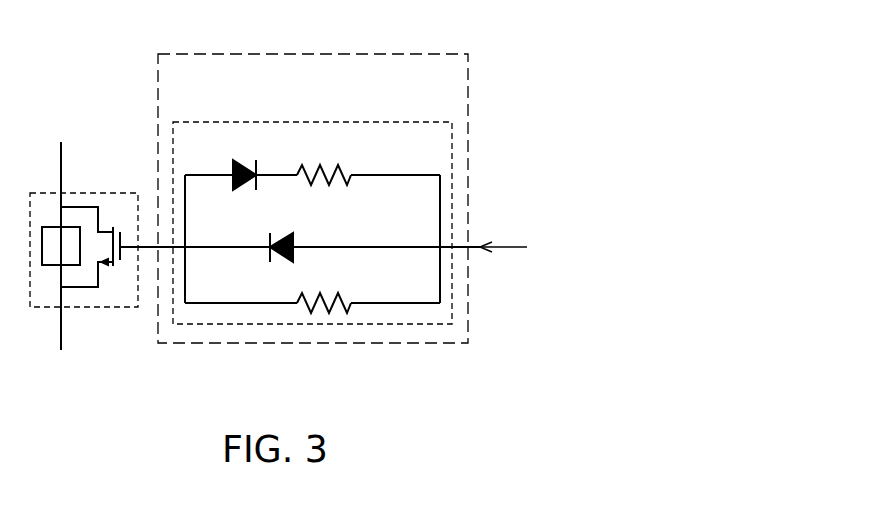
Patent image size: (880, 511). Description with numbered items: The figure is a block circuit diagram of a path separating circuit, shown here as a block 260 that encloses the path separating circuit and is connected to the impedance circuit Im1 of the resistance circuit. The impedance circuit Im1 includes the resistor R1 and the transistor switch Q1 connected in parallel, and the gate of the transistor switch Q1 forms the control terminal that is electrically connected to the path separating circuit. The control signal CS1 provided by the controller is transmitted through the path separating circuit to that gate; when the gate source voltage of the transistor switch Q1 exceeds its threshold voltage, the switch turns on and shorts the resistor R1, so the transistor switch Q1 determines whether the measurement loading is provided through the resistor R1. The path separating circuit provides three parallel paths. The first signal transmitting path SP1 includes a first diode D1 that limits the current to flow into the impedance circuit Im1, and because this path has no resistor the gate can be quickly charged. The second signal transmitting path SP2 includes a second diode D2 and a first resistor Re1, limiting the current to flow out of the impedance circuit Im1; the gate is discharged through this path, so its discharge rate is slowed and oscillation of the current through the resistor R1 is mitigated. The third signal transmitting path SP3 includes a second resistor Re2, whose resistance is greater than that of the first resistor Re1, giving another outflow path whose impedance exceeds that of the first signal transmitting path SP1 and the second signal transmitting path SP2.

The driving circuit block 260 is at (280, 53).
The impedance circuit Im1 is at (115, 192).
The resistor R1 is at (61, 246).
The transistor switch Q1 is at (96, 251).
The second diode D2 is at (245, 159).
The first diode D1 is at (281, 231).
The first resistor Re1 is at (324, 160).
The second resistor Re2 is at (324, 289).
The first signal transmitting path SP1 is at (378, 247).
The second signal transmitting path SP2 is at (378, 175).
The third signal transmitting path SP3 is at (378, 303).
The control signal CS1 is at (521, 247).